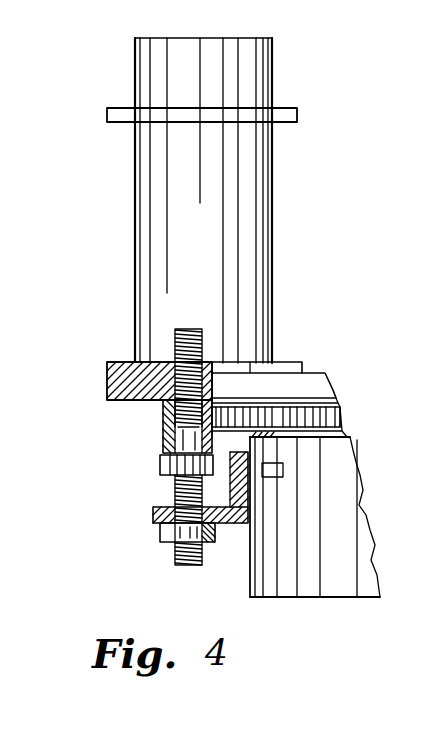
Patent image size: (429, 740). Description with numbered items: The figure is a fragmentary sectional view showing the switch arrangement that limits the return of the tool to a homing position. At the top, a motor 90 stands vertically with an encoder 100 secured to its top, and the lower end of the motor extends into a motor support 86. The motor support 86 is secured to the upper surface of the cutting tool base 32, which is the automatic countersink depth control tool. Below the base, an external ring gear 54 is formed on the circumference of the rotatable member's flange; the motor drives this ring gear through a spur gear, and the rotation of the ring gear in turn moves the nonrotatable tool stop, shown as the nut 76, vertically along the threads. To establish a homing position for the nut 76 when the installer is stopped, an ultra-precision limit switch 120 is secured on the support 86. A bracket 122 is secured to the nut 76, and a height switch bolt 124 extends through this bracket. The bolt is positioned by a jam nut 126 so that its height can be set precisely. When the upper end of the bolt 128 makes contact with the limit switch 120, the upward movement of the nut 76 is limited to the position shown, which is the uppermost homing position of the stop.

The encoder 100 is at (214, 104).
The motor 90 is at (211, 268).
The motor support 86 is at (115, 383).
The cutting tool base 32 is at (333, 385).
The external ring gear 54 is at (330, 418).
The nut (tool stop) 76 is at (351, 523).
The limit switch 120 is at (173, 448).
The upper end of the bolt 128 is at (160, 462).
The height switch bolt 124 is at (173, 490).
The jam nut 126 is at (160, 527).
The bracket 122 is at (233, 515).